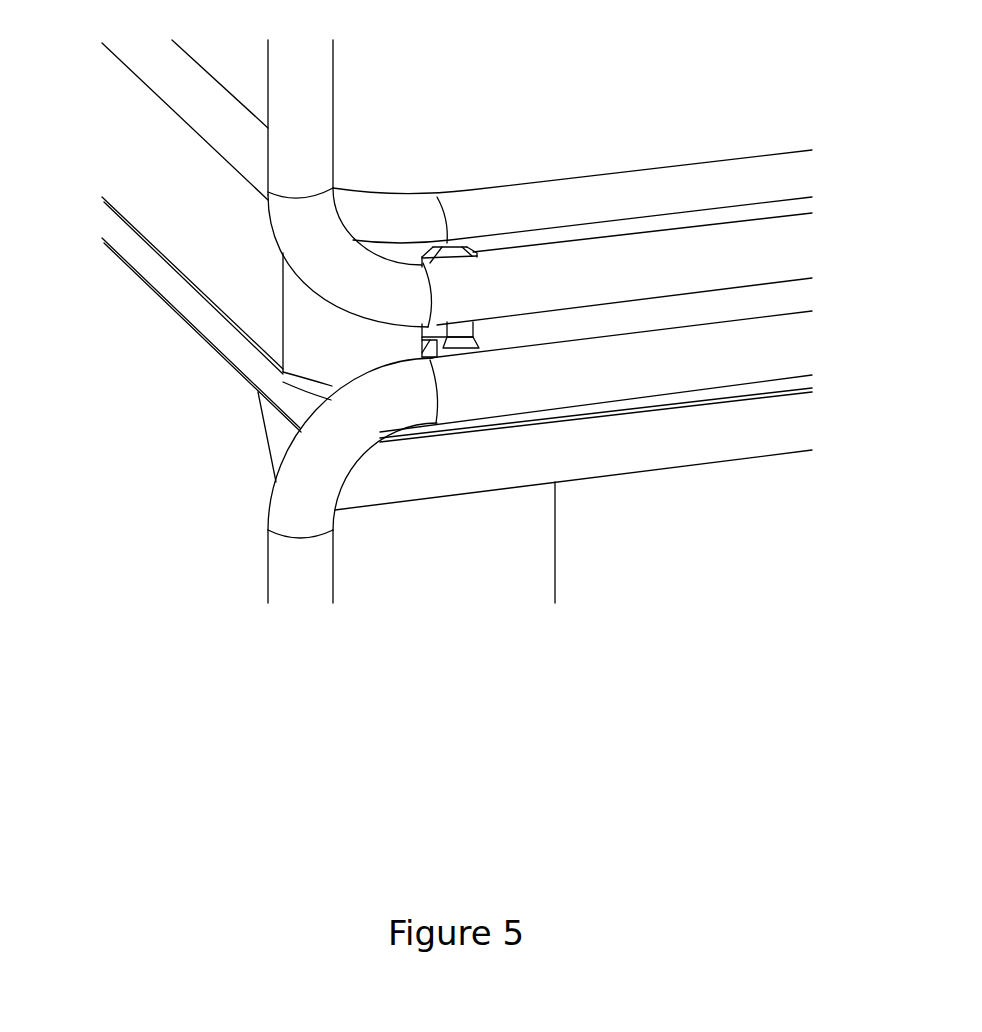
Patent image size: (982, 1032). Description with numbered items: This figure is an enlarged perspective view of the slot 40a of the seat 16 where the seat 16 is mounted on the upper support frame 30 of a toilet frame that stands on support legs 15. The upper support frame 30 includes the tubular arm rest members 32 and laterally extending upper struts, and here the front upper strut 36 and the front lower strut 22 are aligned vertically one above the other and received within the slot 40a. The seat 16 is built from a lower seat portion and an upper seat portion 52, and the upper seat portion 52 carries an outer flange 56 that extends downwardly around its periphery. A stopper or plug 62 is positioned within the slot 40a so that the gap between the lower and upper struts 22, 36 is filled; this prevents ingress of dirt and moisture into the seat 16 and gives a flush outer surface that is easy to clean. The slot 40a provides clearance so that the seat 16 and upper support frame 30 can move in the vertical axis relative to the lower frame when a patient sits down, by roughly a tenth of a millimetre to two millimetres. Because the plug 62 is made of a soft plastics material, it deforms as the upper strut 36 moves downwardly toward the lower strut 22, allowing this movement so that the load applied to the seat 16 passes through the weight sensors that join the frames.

The support leg 15 is at (290, 570).
The seat 16 is at (647, 95).
The front lower strut 22 is at (467, 347).
The upper support frame 30 is at (803, 240).
The arm rest member 32 is at (302, 103).
The front upper strut 36 is at (447, 250).
The slot 40a is at (480, 250).
The upper seat portion 52 is at (708, 182).
The outer flange 56 is at (197, 228).
The plug 62 is at (435, 335).